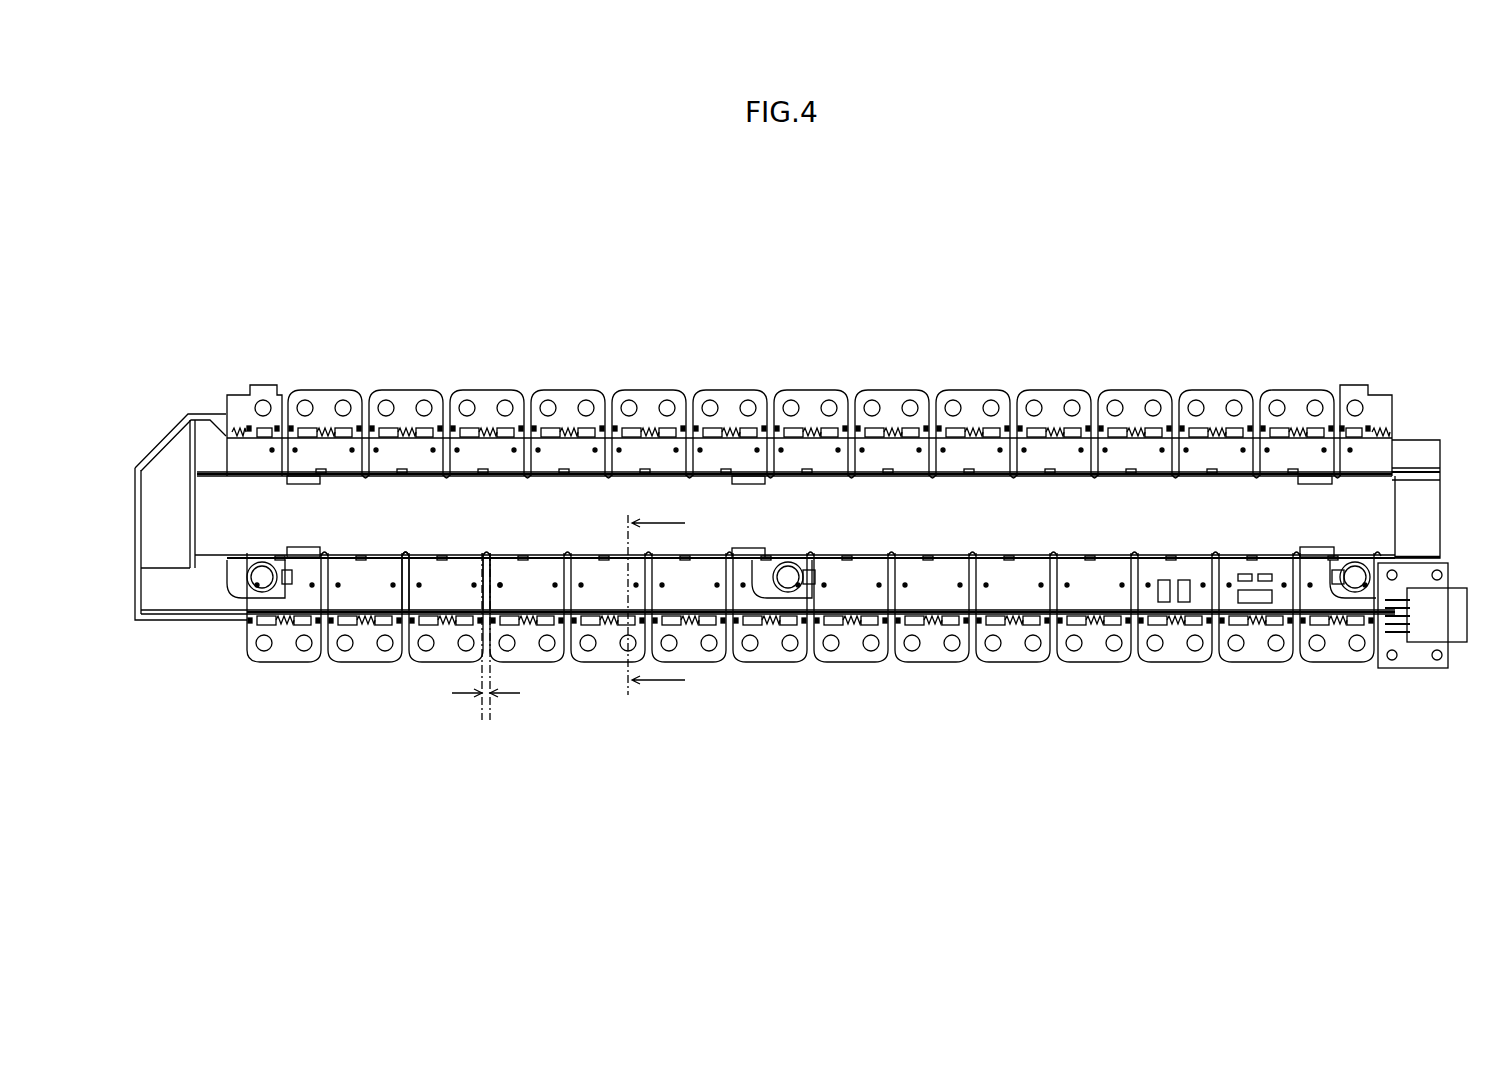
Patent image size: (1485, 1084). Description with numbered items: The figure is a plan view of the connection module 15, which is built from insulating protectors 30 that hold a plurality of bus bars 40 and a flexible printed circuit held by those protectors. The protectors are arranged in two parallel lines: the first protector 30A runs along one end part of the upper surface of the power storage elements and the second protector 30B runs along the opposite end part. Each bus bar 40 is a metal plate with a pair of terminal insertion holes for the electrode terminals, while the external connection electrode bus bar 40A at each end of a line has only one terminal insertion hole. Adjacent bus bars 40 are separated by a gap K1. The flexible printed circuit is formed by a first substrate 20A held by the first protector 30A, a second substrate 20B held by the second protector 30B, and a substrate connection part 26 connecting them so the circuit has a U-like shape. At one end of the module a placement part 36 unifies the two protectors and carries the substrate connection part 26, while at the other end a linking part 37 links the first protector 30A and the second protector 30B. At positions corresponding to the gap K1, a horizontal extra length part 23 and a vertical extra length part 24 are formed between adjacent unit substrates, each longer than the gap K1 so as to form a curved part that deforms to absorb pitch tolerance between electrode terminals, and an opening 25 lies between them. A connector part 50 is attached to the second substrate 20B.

The connection module 15 is at (838, 737).
The first substrate 20A is at (910, 350).
The second substrate 20B is at (918, 690).
The first protector 30A is at (771, 423).
The second protector 30B is at (747, 601).
The horizontal extra length part 23 is at (493, 578).
The vertical extra length part 24 is at (488, 576).
The opening 25 is at (407, 550).
The substrate connection part 26 is at (177, 478).
The insulating protector 30 is at (131, 504).
The placement part 36 is at (133, 558).
The linking part 37 is at (1410, 513).
The bus bar 40 is at (326, 400).
The external connection electrode bus bar 40A is at (258, 388).
The connector part 50 is at (1457, 632).
The gap K1 is at (486, 696).